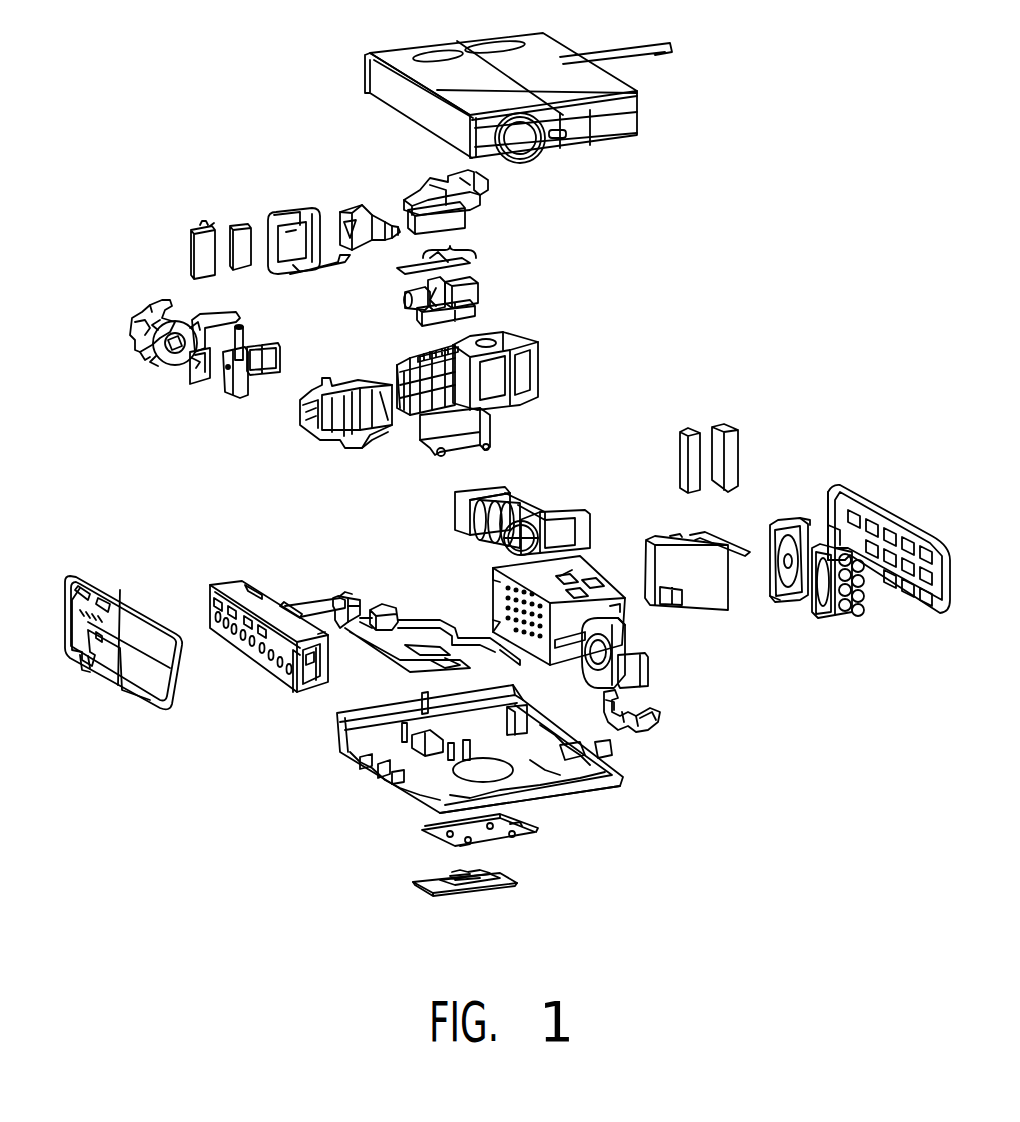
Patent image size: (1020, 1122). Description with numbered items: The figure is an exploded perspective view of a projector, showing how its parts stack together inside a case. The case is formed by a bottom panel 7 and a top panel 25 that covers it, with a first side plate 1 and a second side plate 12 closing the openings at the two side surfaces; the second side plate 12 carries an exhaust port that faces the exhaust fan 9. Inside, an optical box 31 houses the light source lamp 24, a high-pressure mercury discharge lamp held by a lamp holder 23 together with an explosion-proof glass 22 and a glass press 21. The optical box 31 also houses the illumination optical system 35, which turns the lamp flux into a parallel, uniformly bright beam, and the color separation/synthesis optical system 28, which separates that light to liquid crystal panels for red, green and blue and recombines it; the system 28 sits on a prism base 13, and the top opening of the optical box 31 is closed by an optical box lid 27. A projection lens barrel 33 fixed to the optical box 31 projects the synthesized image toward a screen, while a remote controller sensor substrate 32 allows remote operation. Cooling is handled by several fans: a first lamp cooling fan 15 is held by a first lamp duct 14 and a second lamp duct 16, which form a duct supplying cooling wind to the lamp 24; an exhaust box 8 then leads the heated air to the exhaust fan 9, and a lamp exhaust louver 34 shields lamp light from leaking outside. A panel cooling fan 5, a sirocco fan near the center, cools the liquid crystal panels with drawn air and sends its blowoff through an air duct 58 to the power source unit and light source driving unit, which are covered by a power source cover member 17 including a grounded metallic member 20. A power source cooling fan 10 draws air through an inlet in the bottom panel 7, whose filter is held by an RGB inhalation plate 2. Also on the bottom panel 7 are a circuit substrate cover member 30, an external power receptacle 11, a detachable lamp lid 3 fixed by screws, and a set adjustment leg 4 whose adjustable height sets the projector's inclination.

The first side plate 1 is at (135, 680).
The RGB inhalation plate 2 is at (462, 886).
The lamp lid 3 is at (510, 838).
The set adjustment leg 4 is at (632, 732).
The panel cooling fan 5 is at (623, 643).
The bottom panel 7 is at (372, 762).
The exhaust box 8 is at (705, 593).
The exhaust fan 9 is at (783, 524).
The power source cooling fan 10 is at (816, 612).
The external power receptacle 11 is at (394, 618).
The second side plate 12 is at (868, 510).
The prism base 13 is at (360, 440).
The first lamp duct 14 is at (228, 372).
The first lamp cooling fan 15 is at (173, 362).
The second lamp duct 16 is at (140, 342).
The power source cover member 17 is at (590, 592).
The metallic member 20 is at (356, 606).
The glass press 21 is at (193, 226).
The explosion-proof glass 22 is at (232, 226).
The lamp holder 23 is at (276, 212).
The light source lamp 24 is at (346, 208).
The top panel 25 is at (390, 52).
The optical box lid 27 is at (492, 168).
The color separation/synthesis optical system 28 is at (405, 340).
The circuit substrate cover member 30 is at (240, 584).
The optical box 31 is at (410, 372).
The remote controller sensor substrate 32 is at (572, 520).
The projection lens barrel 33 is at (470, 522).
The lamp exhaust louver 34 is at (750, 422).
The illumination optical system 35 is at (450, 240).
The air duct 58 is at (633, 672).